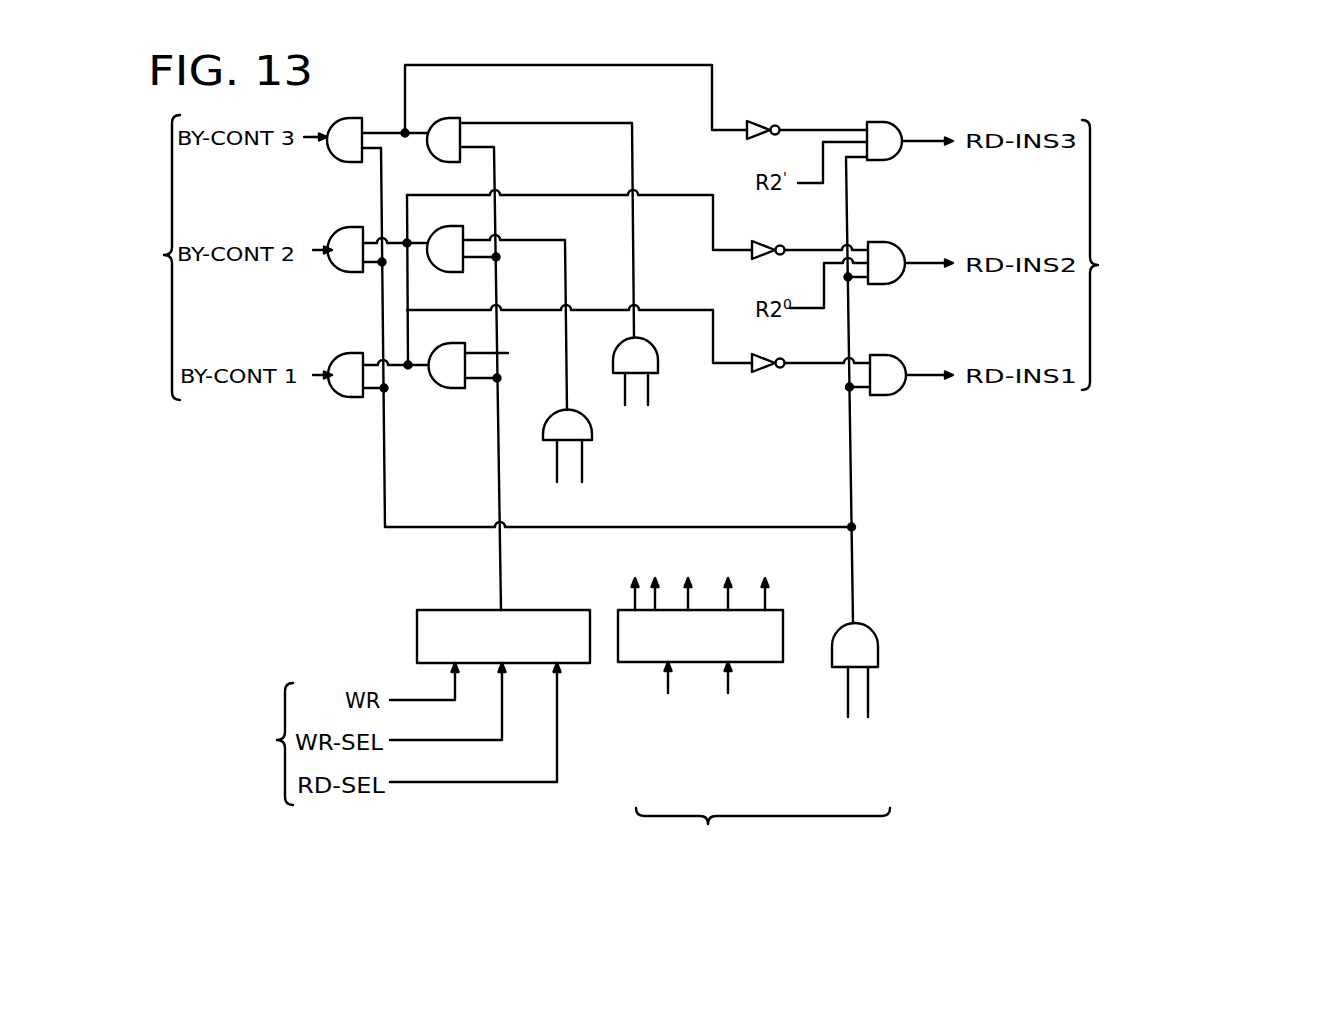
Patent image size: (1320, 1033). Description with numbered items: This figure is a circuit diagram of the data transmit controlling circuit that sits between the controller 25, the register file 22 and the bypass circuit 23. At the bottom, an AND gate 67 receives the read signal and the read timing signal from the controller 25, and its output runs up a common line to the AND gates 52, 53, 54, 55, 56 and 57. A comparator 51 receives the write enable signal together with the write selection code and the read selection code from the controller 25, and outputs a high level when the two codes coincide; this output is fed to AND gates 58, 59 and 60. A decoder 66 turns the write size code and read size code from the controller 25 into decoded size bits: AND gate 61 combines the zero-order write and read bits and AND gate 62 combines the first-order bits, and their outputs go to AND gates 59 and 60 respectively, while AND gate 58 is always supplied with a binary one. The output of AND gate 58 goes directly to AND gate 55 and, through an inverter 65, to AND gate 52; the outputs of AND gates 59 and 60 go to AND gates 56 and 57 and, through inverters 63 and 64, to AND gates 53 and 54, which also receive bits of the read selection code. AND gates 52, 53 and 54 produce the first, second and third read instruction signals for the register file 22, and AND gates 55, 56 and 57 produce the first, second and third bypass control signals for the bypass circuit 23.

The register file 22 is at (1175, 255).
The bypass circuit 23 is at (122, 257).
The controller 25 is at (509, 799).
The comparator 51 is at (535, 610).
The AND gate 52 is at (904, 395).
The AND gate 53 is at (902, 284).
The AND gate 54 is at (905, 160).
The AND gate 55 is at (343, 397).
The AND gate 56 is at (341, 272).
The AND gate 57 is at (337, 162).
The AND gate 58 is at (443, 388).
The AND gate 59 is at (430, 272).
The AND gate 60 is at (433, 158).
The AND gate 61 is at (593, 435).
The AND gate 62 is at (667, 346).
The inverter 63 is at (757, 260).
The inverter 64 is at (752, 140).
The inverter 65 is at (757, 373).
The decoder 66 is at (783, 625).
The AND gate 67 is at (876, 632).